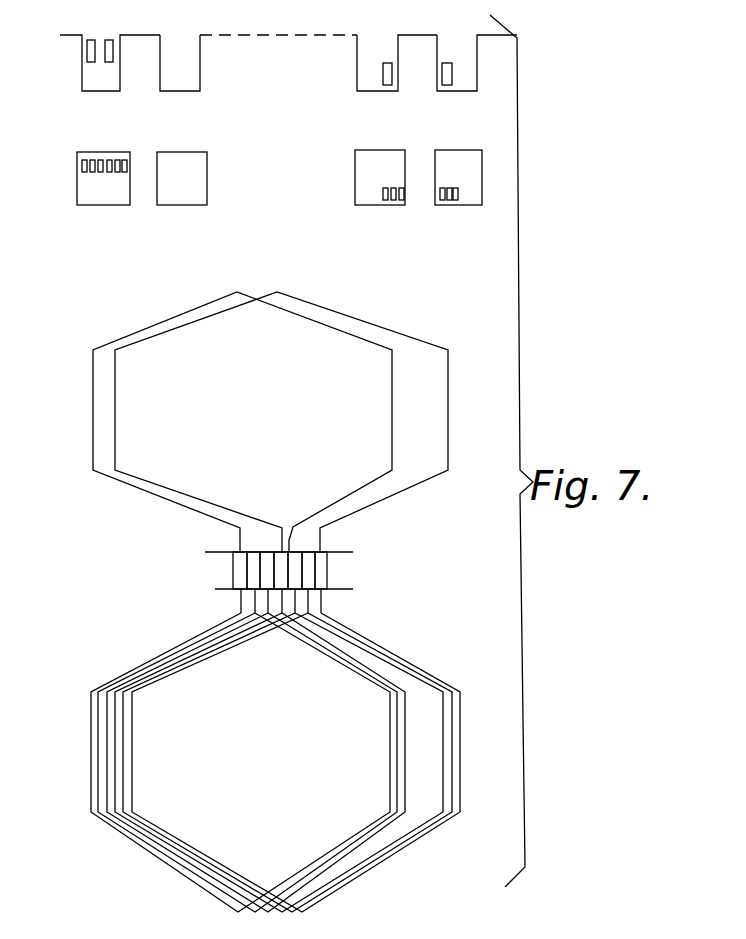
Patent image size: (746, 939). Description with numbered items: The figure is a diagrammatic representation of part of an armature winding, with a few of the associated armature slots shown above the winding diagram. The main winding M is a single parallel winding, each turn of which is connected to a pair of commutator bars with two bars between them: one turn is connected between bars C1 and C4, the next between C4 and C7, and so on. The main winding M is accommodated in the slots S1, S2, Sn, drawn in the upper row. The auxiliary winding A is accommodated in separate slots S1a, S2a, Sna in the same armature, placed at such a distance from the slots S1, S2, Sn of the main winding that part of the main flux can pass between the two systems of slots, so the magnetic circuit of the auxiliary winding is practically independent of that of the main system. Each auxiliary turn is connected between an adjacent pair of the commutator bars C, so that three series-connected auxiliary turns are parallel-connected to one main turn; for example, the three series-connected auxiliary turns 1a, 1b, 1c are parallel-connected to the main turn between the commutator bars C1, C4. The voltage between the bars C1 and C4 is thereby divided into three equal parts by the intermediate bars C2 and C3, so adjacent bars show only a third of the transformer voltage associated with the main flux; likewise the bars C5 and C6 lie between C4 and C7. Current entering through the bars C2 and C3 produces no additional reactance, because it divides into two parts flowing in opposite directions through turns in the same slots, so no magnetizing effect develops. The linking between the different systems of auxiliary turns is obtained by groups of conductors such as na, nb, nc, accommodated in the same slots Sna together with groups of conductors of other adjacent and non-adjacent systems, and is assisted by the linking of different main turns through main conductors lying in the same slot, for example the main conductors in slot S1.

The armature slot S1 is at (82, 74).
The armature slot S2 is at (197, 78).
The armature slot Sn is at (357, 77).
The main winding M is at (452, 78).
The auxiliary turn 1a is at (84, 161).
The auxiliary turn 1b is at (92, 161).
The auxiliary turn 1c is at (100, 161).
The auxiliary winding A is at (269, 531).
The auxiliary slot S1a is at (77, 197).
The auxiliary slot S2a is at (207, 200).
The auxiliary slot Sna is at (355, 197).
The commutator bars C is at (293, 559).
The commutator bar C1 is at (242, 557).
The commutator bar C2 is at (252, 567).
The commutator bar C3 is at (265, 578).
The commutator bar C4 is at (292, 562).
The commutator bar C5 is at (295, 565).
The commutator bar C6 is at (310, 567).
The commutator bar C7 is at (323, 582).
The group of conductors na is at (390, 735).
The group of conductors nb is at (397, 763).
The group of conductors nc is at (405, 735).